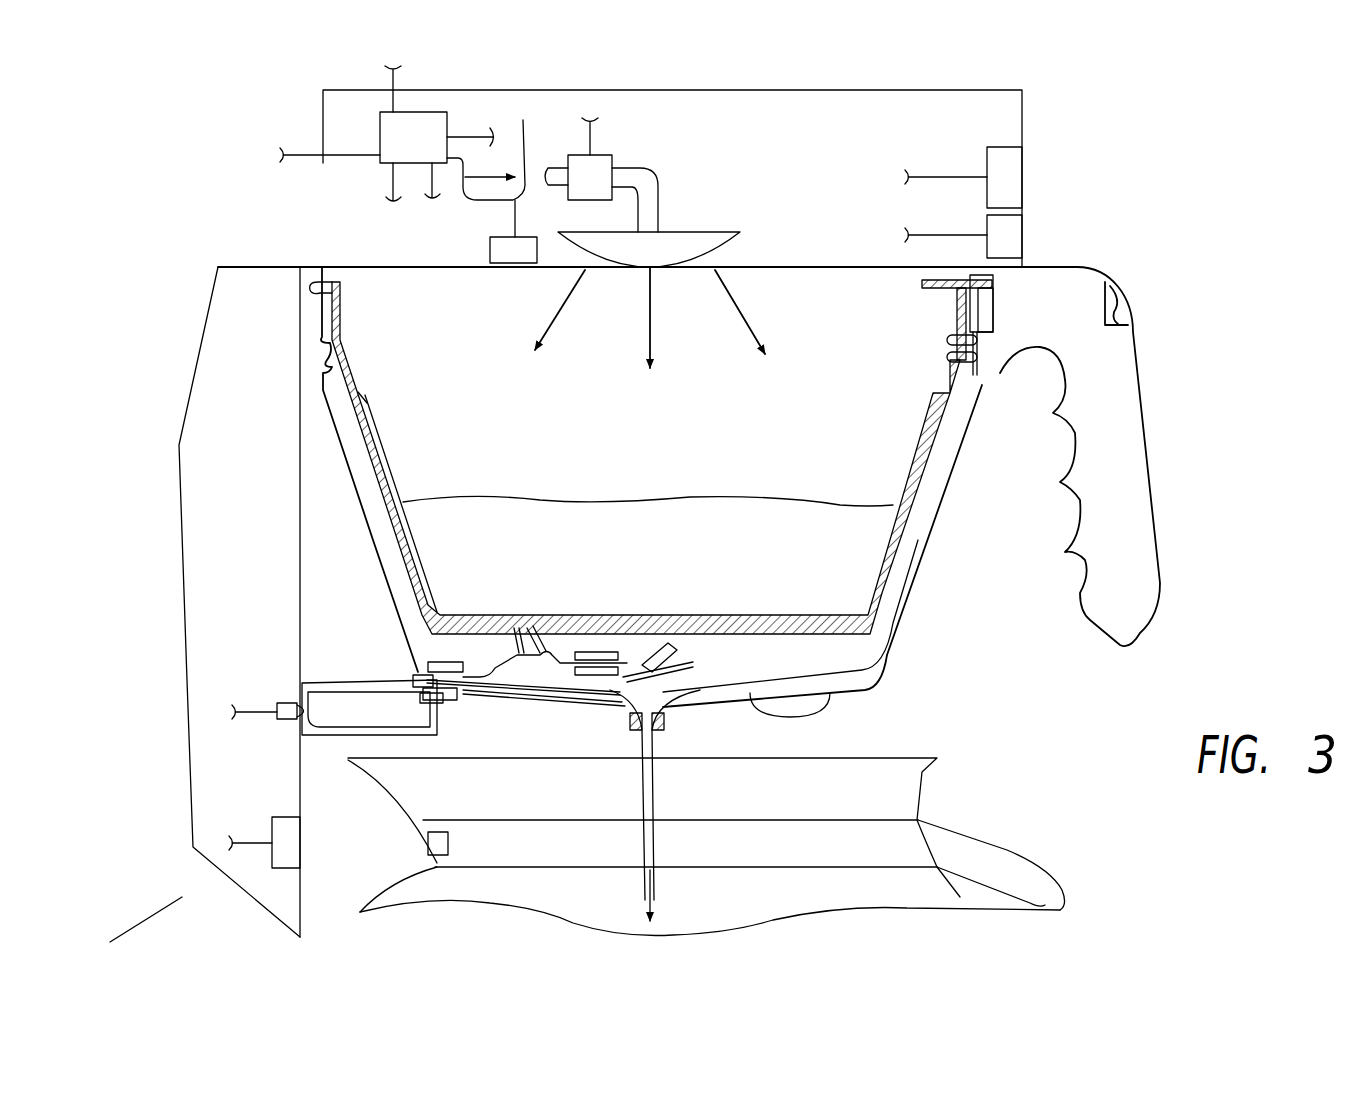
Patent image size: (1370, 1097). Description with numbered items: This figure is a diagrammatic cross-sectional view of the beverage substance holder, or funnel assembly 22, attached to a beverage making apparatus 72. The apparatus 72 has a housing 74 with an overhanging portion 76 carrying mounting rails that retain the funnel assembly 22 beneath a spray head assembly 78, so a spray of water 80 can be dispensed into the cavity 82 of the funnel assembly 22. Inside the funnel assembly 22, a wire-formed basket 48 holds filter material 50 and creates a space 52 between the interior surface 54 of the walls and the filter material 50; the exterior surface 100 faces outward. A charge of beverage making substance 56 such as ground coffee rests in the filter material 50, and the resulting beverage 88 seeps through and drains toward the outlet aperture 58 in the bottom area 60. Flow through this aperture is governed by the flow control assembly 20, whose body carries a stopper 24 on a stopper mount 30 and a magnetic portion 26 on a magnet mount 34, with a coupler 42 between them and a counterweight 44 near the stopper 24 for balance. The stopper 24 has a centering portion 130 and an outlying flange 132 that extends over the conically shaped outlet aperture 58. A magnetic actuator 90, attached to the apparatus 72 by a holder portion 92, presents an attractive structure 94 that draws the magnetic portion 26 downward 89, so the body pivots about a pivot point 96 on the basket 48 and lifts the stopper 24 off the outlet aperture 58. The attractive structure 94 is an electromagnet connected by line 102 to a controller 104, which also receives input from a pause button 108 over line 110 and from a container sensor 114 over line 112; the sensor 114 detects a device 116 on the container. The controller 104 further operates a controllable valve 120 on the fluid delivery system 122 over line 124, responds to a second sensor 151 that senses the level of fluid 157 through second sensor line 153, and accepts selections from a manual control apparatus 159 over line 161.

The flow control assembly 20 is at (648, 582).
The funnel assembly 22 is at (975, 667).
The stopper 24 is at (718, 663).
The magnetic portion 26 is at (445, 700).
The stopper mount 30 is at (668, 653).
The magnet mount 34 is at (418, 677).
The coupler 42 is at (537, 628).
The counterweight 44 is at (580, 685).
The basket 48 is at (925, 472).
The filter material 50 is at (930, 430).
The space 52 is at (925, 520).
The interior surface 54 is at (898, 627).
The beverage making substance 56 is at (798, 505).
The outlet aperture 58 is at (667, 715).
The bottom area 60 is at (750, 710).
The beverage making apparatus 72 is at (1145, 92).
The housing 74 is at (818, 88).
The overhanging portion 76 is at (1000, 128).
The spray head assembly 78 is at (725, 230).
The spray of water 80 is at (640, 322).
The cavity 82 is at (423, 342).
The beverage 88 is at (652, 797).
The downward displacement 89 is at (455, 660).
The magnetic actuator 90 is at (487, 730).
The holder portion 92 is at (323, 683).
The attractive structure 94 is at (440, 703).
The pivot point 96 is at (518, 628).
The exterior surface 100 is at (862, 695).
The line 102 is at (335, 150).
The controller 104 is at (383, 128).
The pause button 108 is at (1020, 182).
The line 110 is at (492, 128).
The line 112 is at (390, 185).
The container sensor 114 is at (283, 868).
The device 116 is at (428, 842).
The controllable valve 120 is at (620, 163).
The fluid delivery system 122 is at (660, 192).
The line 124 is at (436, 192).
The centering portion 130 is at (640, 690).
The outlying flange 132 is at (702, 672).
The second sensor 151 is at (490, 252).
The second sensor line 153 is at (499, 145).
The level of fluid 157 is at (563, 500).
The manual control apparatus 159 is at (1020, 240).
The line 161 is at (405, 70).